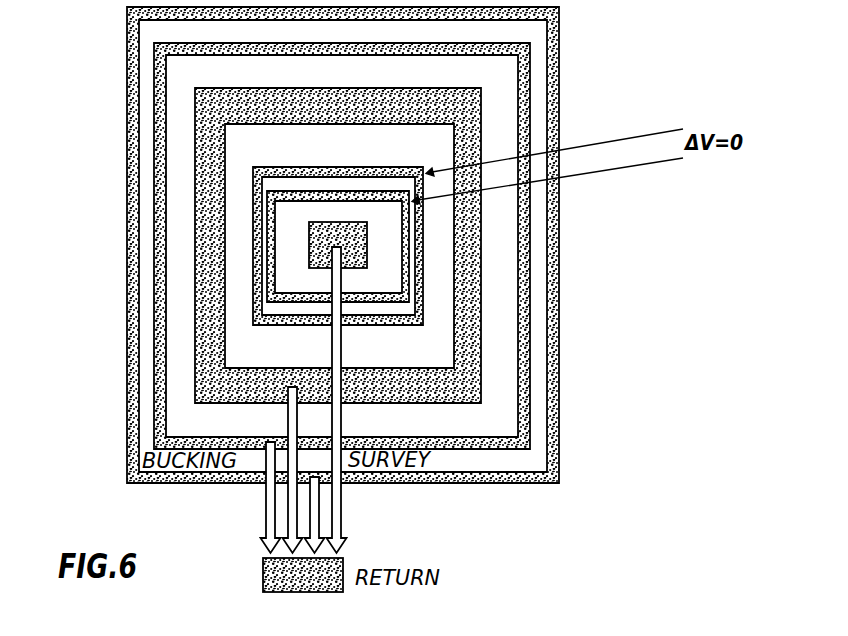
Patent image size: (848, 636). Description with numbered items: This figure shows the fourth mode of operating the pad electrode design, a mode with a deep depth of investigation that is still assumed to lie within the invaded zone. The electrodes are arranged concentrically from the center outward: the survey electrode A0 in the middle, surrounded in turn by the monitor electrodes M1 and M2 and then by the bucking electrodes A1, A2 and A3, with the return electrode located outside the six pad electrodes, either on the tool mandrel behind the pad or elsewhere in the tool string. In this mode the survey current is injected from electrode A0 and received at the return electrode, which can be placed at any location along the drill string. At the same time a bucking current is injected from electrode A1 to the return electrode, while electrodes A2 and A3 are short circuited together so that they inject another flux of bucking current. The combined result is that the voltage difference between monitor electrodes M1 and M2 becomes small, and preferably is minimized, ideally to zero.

The survey current electrode A0 is at (309, 262).
The bucking current electrode A1 is at (195, 112).
The bucking current electrode A2 is at (156, 54).
The bucking current electrode A3 is at (128, 26).
The monitor electrode M1 is at (268, 233).
The monitor electrode M2 is at (253, 210).